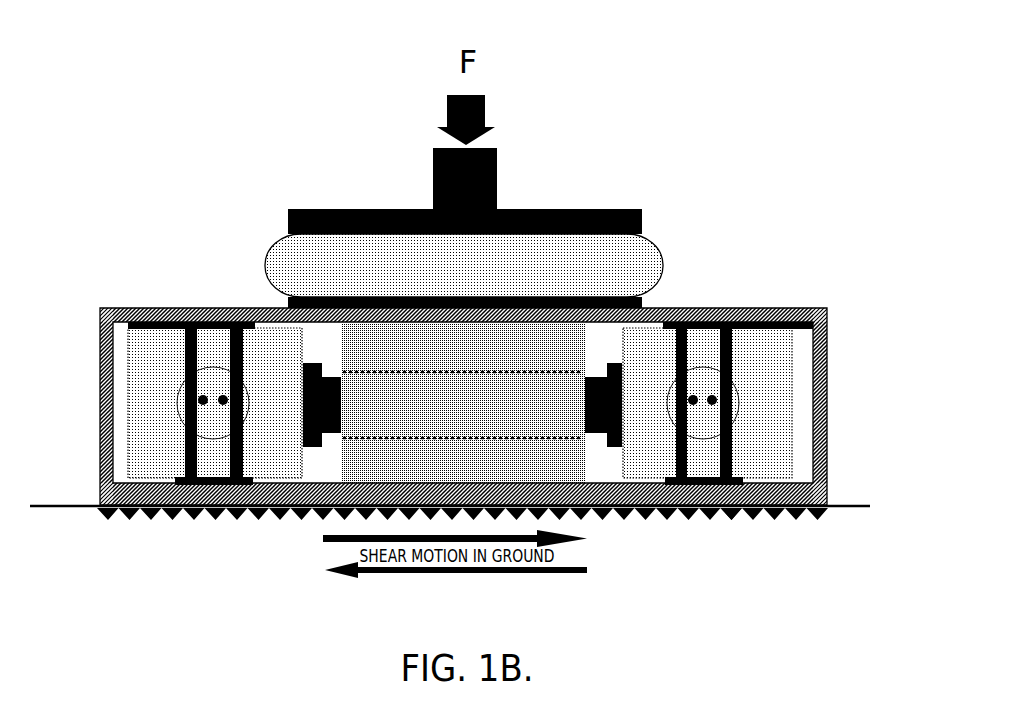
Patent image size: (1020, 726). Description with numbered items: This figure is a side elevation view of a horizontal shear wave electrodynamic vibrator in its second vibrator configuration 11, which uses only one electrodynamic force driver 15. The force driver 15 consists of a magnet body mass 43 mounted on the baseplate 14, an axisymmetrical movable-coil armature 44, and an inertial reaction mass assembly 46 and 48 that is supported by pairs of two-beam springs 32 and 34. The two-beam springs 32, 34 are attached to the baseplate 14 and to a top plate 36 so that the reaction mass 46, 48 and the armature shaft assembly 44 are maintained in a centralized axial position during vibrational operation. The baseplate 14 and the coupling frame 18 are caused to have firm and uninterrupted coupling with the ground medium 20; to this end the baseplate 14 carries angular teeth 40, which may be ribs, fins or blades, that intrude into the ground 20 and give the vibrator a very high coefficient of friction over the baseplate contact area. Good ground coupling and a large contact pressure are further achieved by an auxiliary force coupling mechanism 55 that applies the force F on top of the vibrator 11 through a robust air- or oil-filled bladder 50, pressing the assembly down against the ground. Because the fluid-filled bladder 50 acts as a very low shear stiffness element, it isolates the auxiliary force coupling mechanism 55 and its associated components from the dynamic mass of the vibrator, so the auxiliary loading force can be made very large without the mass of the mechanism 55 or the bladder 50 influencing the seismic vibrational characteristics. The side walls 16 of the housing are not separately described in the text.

The second vibrator configuration 11 is at (852, 333).
The baseplate 14 is at (157, 514).
The electrodynamic force driver 15 is at (356, 450).
The side walls 16 is at (98, 442).
The coupling frame 18 is at (733, 315).
The ground medium 20 is at (682, 555).
The two-beam springs 32 is at (690, 365).
The two-beam springs 34 is at (232, 348).
The top plate 36 is at (244, 322).
The angular teeth 40 is at (725, 518).
The magnet body mass 43 is at (565, 462).
The movable-coil armature 44 is at (497, 410).
The inertial reaction mass assembly 46 is at (780, 350).
The inertial reaction mass assembly 48 is at (140, 374).
The fluid-filled bladder 50 is at (620, 252).
The auxiliary force coupling mechanism 55 is at (353, 208).